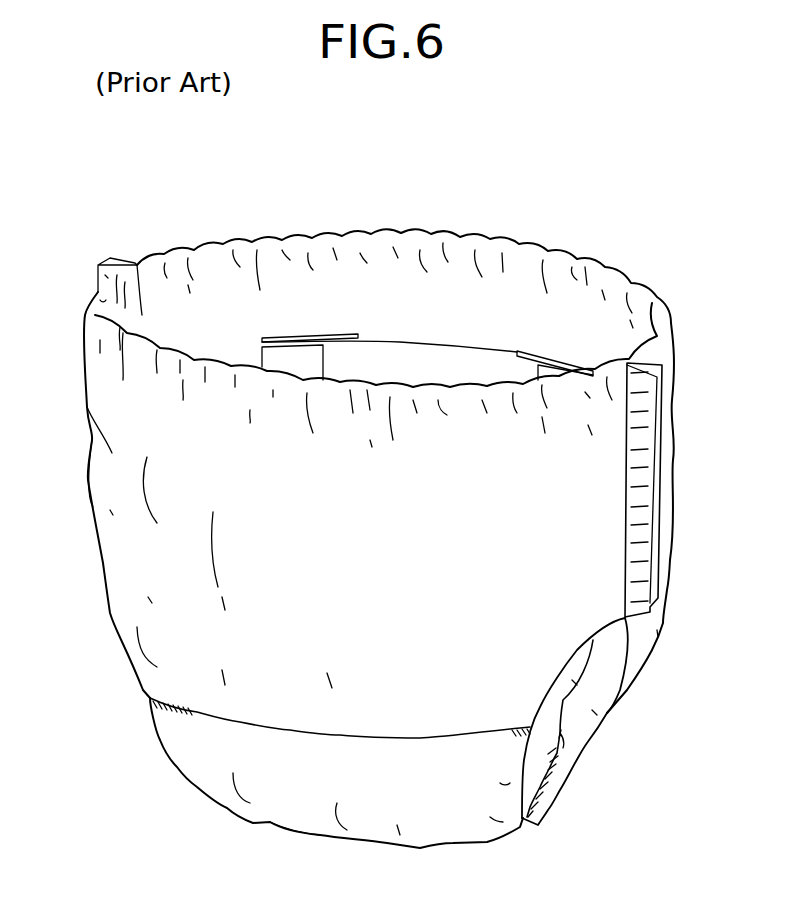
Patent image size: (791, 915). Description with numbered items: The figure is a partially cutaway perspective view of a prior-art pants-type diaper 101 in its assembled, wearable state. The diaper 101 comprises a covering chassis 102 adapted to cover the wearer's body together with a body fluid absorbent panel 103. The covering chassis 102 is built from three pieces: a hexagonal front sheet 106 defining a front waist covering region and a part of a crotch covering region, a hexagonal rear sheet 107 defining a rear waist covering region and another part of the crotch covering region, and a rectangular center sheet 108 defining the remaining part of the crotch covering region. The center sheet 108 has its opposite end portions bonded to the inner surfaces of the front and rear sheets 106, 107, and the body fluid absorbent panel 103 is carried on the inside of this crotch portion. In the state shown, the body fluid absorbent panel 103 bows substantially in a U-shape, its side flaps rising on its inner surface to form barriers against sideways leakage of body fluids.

The pants-type diaper 101 is at (510, 178).
The covering chassis 102 is at (210, 243).
The body fluid absorbent panel 103 is at (557, 752).
The front sheet 106 is at (128, 616).
The rear sheet 107 is at (642, 653).
The center sheet 108 is at (290, 813).